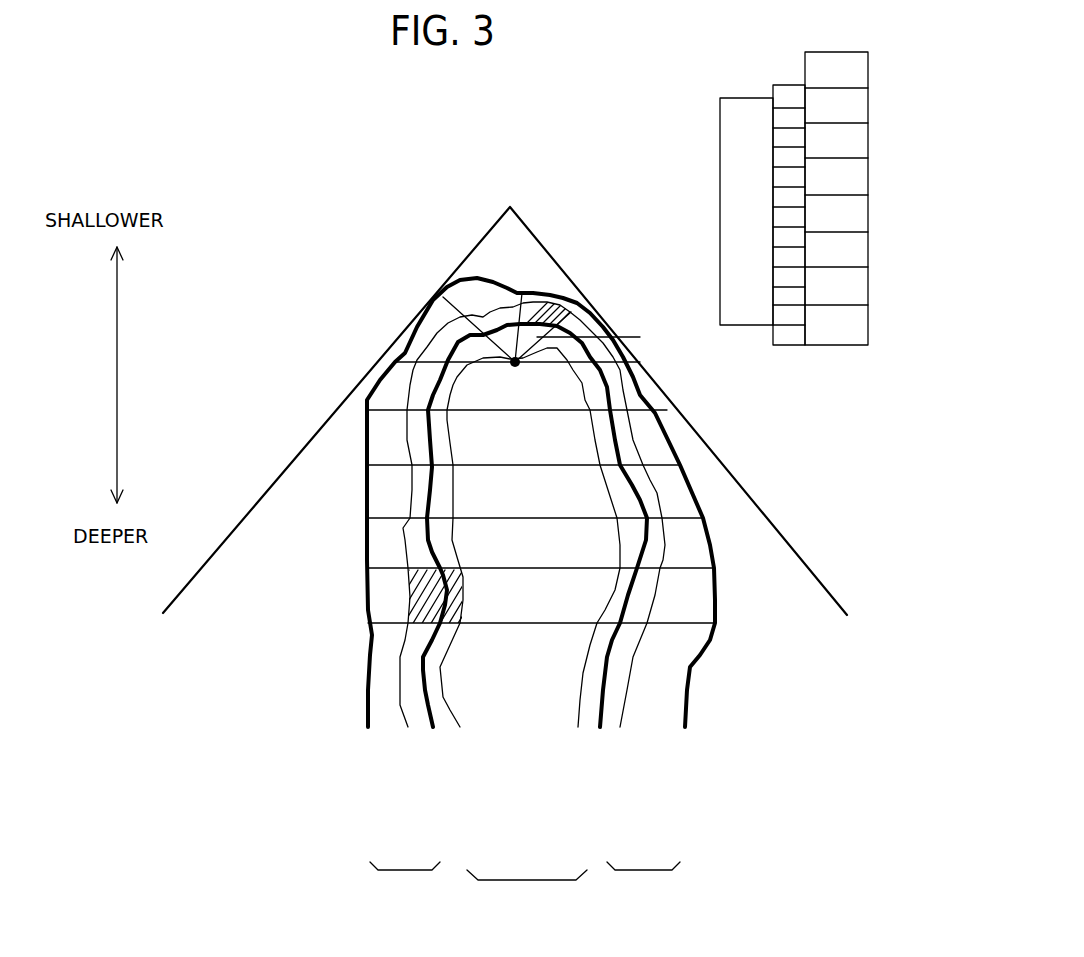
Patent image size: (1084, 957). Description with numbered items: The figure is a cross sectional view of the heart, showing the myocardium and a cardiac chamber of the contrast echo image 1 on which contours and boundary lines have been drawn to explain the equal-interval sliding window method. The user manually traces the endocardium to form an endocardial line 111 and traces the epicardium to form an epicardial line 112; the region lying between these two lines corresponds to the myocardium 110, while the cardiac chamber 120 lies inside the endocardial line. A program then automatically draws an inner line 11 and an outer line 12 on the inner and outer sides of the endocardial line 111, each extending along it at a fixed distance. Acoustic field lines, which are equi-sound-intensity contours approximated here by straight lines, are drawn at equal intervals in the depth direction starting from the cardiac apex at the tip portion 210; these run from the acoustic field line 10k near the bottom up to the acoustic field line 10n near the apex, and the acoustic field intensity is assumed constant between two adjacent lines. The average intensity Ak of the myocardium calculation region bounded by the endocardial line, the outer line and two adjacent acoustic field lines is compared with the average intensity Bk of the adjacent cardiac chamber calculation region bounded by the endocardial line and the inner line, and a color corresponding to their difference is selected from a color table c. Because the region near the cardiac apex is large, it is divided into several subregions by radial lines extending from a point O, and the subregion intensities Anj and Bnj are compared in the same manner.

The ultrasonic probe / transducer array system 1 is at (521, 566).
The tip portion 210 is at (505, 393).
The color table c is at (870, 73).
The myocardium 110 is at (525, 884).
The inner transducer group 120 is at (527, 889).
The endocardial line 111 is at (437, 740).
The epicardial line 112 is at (372, 740).
The inner line 11 is at (462, 740).
The outer line 12 is at (412, 740).
The acoustic field line 10n is at (640, 365).
The acoustic field line 10k is at (559, 627).
The point O is at (515, 362).
The intensity of myocardium subregion Anj is at (515, 362).
The intensity of cardiac chamber subregion Bnj is at (602, 338).
The average intensity of myocardium calculation region Ak is at (432, 598).
The average intensity of cardiac chamber calculation region Bk is at (458, 602).